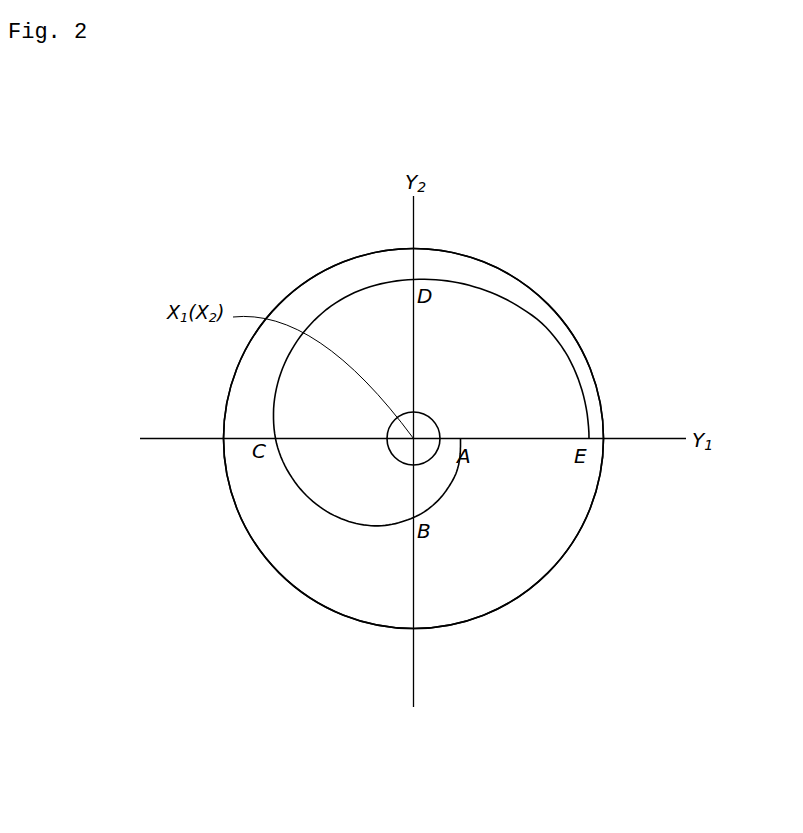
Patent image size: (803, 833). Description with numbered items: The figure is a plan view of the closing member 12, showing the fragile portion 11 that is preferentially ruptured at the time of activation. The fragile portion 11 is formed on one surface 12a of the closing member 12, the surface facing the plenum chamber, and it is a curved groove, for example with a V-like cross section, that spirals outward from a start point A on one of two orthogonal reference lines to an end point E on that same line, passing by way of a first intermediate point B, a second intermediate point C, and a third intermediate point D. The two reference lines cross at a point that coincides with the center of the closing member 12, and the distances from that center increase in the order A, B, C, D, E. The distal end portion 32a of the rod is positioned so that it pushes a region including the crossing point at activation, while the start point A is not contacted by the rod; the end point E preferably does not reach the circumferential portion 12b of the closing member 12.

The fragile portion 11 is at (543, 324).
The closing member 12 is at (560, 511).
The one surface 12a is at (312, 583).
The circumferential portion 12b is at (532, 590).
The distal end portion 32a is at (427, 414).